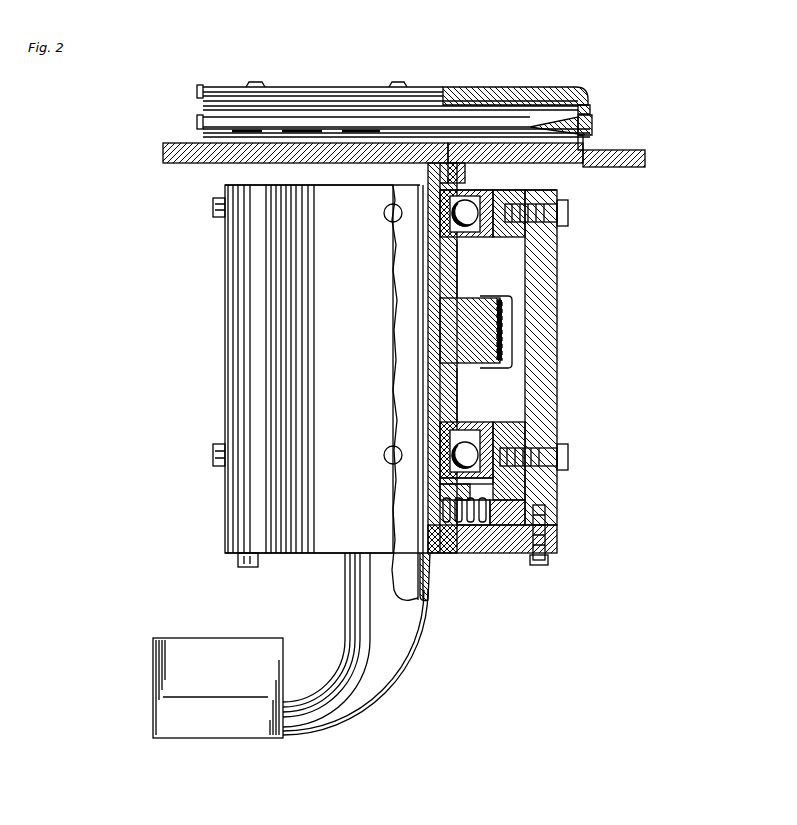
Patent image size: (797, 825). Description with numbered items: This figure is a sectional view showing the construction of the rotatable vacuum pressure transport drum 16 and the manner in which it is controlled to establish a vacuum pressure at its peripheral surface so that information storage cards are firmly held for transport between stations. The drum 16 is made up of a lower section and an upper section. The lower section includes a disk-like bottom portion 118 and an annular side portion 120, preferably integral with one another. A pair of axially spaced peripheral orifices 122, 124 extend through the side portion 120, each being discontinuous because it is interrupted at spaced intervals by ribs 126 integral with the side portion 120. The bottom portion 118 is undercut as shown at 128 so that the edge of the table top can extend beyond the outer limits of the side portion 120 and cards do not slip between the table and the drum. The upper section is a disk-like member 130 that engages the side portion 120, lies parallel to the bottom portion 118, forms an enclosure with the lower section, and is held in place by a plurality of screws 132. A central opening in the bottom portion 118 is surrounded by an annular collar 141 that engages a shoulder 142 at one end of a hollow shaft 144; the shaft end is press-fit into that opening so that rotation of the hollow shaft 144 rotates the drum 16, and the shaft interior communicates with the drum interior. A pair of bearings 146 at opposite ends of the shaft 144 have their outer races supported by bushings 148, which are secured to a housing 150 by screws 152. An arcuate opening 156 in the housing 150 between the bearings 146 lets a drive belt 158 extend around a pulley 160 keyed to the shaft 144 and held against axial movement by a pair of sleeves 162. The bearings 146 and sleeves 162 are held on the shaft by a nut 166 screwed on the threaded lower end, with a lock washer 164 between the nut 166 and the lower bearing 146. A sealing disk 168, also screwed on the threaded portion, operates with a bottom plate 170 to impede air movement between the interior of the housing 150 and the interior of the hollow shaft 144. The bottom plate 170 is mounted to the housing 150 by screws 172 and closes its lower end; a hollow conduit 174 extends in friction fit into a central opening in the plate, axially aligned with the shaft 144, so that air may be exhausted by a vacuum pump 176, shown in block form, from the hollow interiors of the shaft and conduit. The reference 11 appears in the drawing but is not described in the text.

The mounting plate 11 is at (188, 152).
The rotatable vacuum pressure transport drum 16 is at (545, 84).
The disk-like bottom portion 118 is at (538, 160).
The annular side portion 120 is at (203, 124).
The peripheral orifice 122 is at (292, 104).
The peripheral orifice 124 is at (270, 136).
The ribs 126 is at (236, 134).
The undercut 128 is at (573, 165).
The disk-like member 130 is at (203, 92).
The screws 132 is at (258, 84).
The annular collar 141 is at (468, 174).
The shoulder 142 is at (466, 182).
The hollow shaft 144 is at (412, 262).
The bearings 146 is at (460, 212).
The bushings 148 is at (510, 234).
The housing 150 is at (250, 300).
The screws 152 is at (213, 208).
The arcuate opening 156 is at (510, 338).
The drive belt 158 is at (504, 300).
The pulley 160 is at (465, 310).
The sleeves 162 is at (455, 280).
The lock washer 164 is at (460, 486).
The nut 166 is at (440, 496).
The sealing disk 168 is at (482, 510).
The bottom plate 170 is at (488, 553).
The screws 172 is at (253, 566).
The hollow conduit 174 is at (356, 610).
The vacuum pump 176 is at (232, 645).